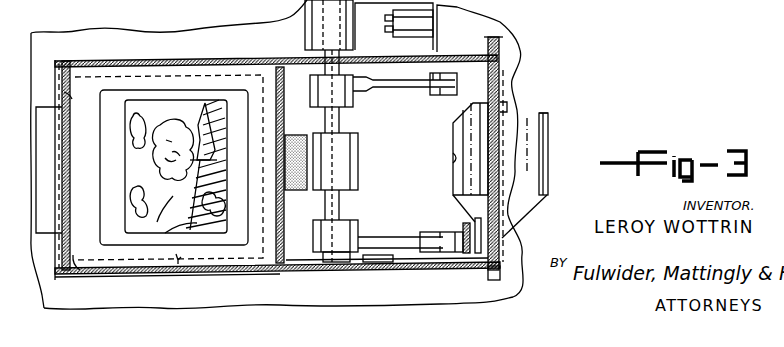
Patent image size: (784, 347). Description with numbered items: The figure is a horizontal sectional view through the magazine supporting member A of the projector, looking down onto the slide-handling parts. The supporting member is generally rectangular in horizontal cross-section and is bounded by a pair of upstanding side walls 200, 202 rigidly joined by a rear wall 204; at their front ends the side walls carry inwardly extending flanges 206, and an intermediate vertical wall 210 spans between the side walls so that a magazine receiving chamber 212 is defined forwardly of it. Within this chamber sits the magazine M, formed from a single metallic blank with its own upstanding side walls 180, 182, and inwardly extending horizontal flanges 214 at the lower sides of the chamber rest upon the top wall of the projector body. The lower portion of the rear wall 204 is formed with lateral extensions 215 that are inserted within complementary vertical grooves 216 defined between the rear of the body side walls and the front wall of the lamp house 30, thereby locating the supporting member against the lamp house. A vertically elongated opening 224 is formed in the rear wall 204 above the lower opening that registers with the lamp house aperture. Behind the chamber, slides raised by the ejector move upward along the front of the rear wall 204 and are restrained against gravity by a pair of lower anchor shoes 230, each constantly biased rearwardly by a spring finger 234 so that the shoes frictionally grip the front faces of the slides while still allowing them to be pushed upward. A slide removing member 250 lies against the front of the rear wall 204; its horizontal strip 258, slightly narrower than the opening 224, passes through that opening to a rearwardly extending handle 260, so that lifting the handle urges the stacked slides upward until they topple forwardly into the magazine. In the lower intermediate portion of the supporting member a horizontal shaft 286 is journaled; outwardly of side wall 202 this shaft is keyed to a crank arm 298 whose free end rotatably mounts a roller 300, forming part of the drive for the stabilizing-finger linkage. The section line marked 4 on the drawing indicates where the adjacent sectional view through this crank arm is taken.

The lamp house 30 is at (682, 0).
The side wall 180 is at (130, 277).
The side wall 182 is at (105, 62).
The side wall 200 is at (230, 277).
The side wall 202 is at (153, 62).
The rear wall 204 is at (498, 70).
The inwardly extending flanges 206 is at (68, 96).
The vertical wall 210 is at (283, 128).
The magazine receiving chamber 212 is at (78, 280).
The inwardly extending horizontal flanges 214 is at (173, 277).
The lateral extensions 215 is at (492, 271).
The vertical grooves 216 is at (505, 302).
The vertically elongated opening 224 is at (506, 108).
The lower anchor shoes 230 is at (480, 264).
The spring fingers 234 is at (475, 232).
The slide removing member 250 is at (495, 82).
The horizontal strip 258 is at (505, 180).
The handle 260 is at (542, 150).
The horizontal shaft 286 is at (340, 123).
The crank arm 298 is at (372, 0).
The roller 300 is at (402, 30).
The section line 4- 4 is at (280, 12).